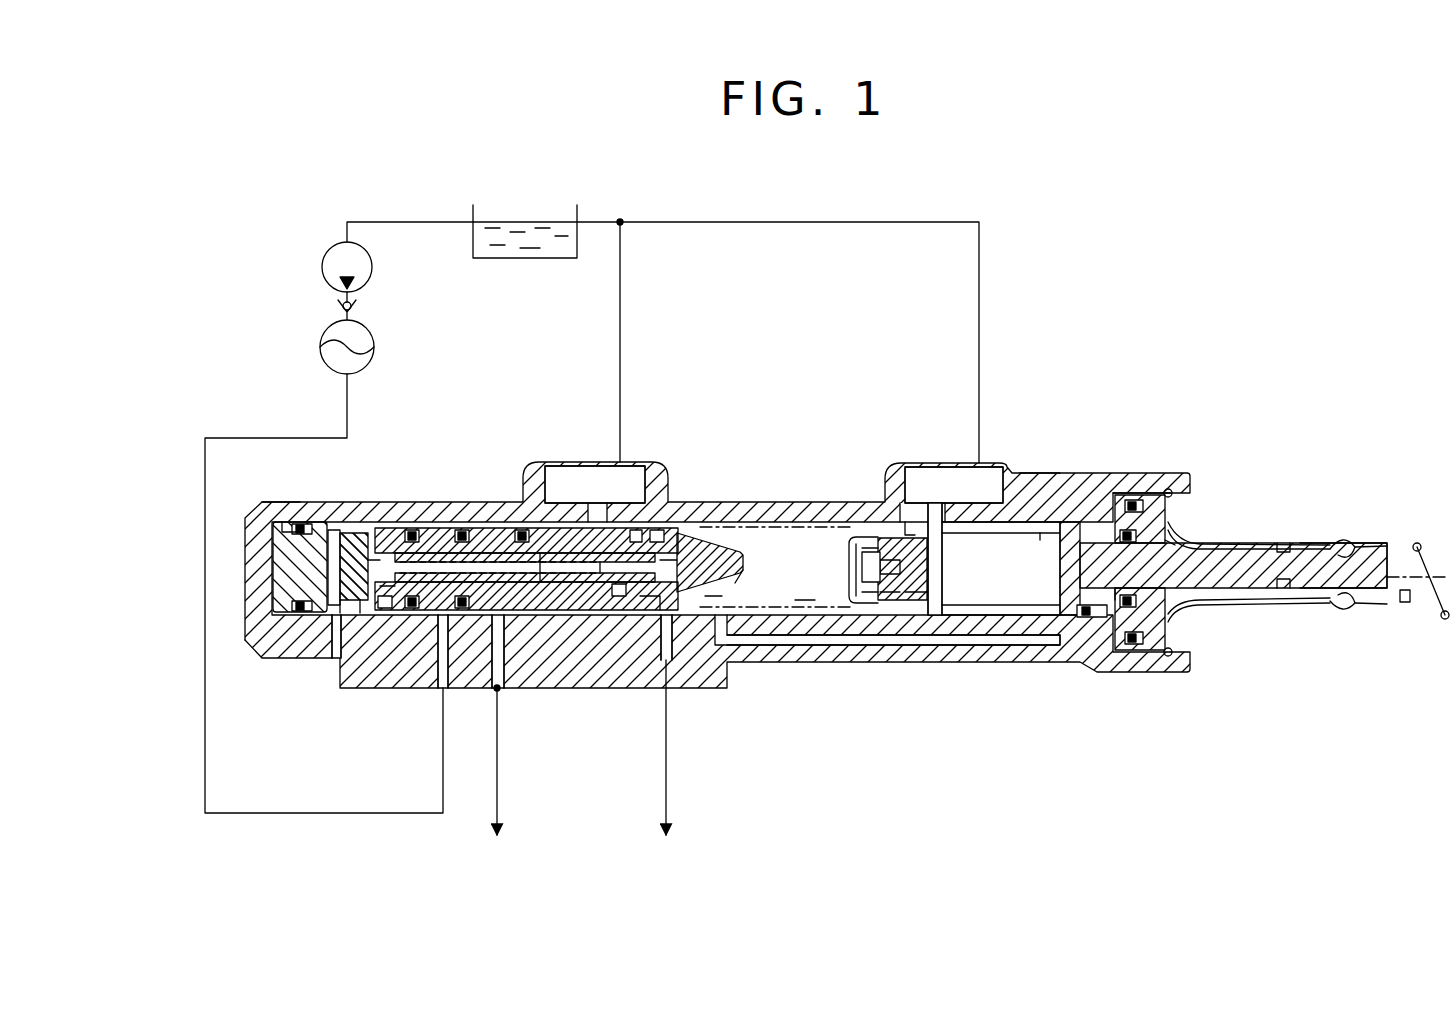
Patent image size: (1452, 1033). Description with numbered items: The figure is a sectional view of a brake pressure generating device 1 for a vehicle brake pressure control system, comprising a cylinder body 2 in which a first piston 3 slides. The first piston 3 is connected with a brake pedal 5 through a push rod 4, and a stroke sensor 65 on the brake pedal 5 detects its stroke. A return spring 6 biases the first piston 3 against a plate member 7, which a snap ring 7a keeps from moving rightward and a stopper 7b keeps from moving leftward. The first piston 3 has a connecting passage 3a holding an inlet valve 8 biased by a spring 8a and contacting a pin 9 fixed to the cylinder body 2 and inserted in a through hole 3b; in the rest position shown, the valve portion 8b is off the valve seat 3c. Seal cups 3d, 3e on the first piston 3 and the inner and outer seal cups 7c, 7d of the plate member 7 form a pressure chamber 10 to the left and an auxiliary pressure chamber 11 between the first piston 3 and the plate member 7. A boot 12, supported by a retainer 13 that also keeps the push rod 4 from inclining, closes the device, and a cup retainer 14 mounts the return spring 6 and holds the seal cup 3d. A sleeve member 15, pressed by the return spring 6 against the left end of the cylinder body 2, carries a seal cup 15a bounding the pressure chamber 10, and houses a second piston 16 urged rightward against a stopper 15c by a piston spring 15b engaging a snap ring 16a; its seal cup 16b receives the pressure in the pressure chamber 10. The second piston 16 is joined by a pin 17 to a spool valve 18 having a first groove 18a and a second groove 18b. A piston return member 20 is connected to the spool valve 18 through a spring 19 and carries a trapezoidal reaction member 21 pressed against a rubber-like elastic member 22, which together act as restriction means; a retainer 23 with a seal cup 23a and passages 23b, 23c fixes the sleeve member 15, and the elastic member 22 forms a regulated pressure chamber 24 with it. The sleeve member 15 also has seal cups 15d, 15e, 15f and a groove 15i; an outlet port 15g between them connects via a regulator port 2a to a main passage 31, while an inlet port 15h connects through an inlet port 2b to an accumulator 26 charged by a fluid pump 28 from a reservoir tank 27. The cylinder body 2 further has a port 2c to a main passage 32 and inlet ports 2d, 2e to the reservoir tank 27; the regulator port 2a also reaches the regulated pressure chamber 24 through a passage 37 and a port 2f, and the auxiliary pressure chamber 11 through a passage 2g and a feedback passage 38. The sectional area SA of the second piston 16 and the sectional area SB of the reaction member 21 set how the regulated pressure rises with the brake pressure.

The brake pressure generating device 1 is at (1040, 408).
The cylinder body 2 is at (1080, 490).
The regulator port 2a is at (500, 645).
The inlet port 2b is at (443, 660).
The port 2c is at (668, 645).
The inlet port 2d is at (952, 475).
The inlet port 2e is at (623, 477).
The port 2f is at (340, 660).
The passage 2g is at (977, 637).
The first piston 3 is at (1097, 558).
The connecting passage 3a is at (905, 522).
The through hole 3b is at (1040, 535).
The valve seat 3c is at (908, 592).
The seal cup 3d is at (882, 592).
The seal cup 3e is at (1080, 614).
The push rod 4 is at (1368, 560).
The brake pedal 5 is at (1420, 607).
The return spring 6 is at (822, 600).
The plate member 7 is at (1172, 635).
The snap ring 7a is at (1160, 496).
The stopper 7b is at (1115, 640).
The inner seal cup 7c is at (1173, 614).
The outer seal cup 7d is at (1143, 647).
The inlet valve 8 is at (870, 525).
The spring 8a is at (858, 592).
The valve portion 8b is at (872, 585).
The pin 9 is at (935, 572).
The pressure chamber 10 is at (795, 592).
The auxiliary pressure chamber 11 is at (1107, 614).
The boot 12 is at (1355, 617).
The retainer 13 is at (1277, 610).
The cup retainer 14 is at (838, 580).
The sleeve member 15 is at (578, 612).
The seal cup 15a is at (620, 612).
The piston spring 15b is at (722, 527).
The stopper 15c is at (690, 523).
The seal cup 15d is at (525, 523).
The seal cup 15e is at (462, 527).
The seal cup 15f is at (413, 523).
The outlet port 15g is at (462, 613).
The inlet port 15h is at (440, 613).
The groove 15i is at (410, 613).
The second piston 16 is at (745, 560).
The snap ring 16a is at (743, 585).
The seal cup 16b is at (650, 612).
The pin 17 is at (600, 612).
The spool valve 18 is at (555, 612).
The first groove 18a is at (488, 523).
The second groove 18b is at (547, 527).
The spring 19 is at (392, 613).
The piston return member 20 is at (368, 613).
The reaction member 21 is at (338, 530).
The elastic member 22 is at (366, 530).
The retainer 23 is at (290, 573).
The seal cup 23a is at (286, 523).
The passage 23b is at (290, 605).
The passage 23c is at (288, 521).
The regulated pressure chamber 24 is at (285, 503).
The accumulator 26 is at (322, 340).
The reservoir tank 27 is at (473, 238).
The fluid pump 28 is at (324, 258).
The main passage 31 is at (493, 812).
The main passage 32 is at (672, 802).
The passage 37 is at (425, 613).
The feedback passage 38 is at (718, 640).
The stroke sensor 65 is at (1403, 603).
The sectional area of the second piston SA is at (675, 522).
The sectional area of the reaction member SB is at (390, 522).